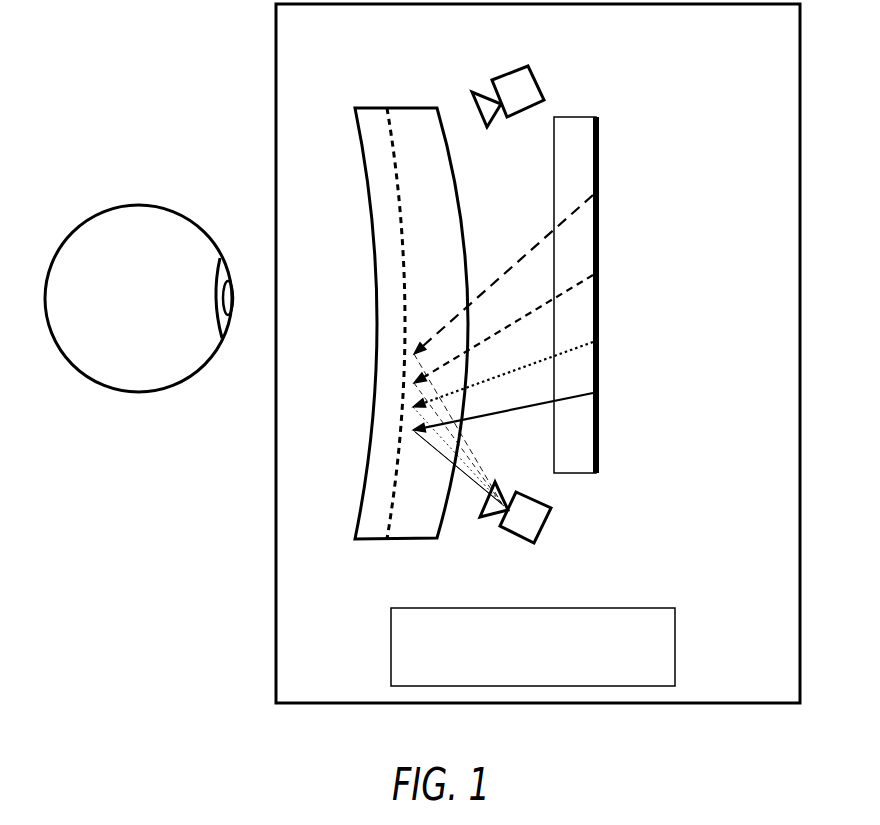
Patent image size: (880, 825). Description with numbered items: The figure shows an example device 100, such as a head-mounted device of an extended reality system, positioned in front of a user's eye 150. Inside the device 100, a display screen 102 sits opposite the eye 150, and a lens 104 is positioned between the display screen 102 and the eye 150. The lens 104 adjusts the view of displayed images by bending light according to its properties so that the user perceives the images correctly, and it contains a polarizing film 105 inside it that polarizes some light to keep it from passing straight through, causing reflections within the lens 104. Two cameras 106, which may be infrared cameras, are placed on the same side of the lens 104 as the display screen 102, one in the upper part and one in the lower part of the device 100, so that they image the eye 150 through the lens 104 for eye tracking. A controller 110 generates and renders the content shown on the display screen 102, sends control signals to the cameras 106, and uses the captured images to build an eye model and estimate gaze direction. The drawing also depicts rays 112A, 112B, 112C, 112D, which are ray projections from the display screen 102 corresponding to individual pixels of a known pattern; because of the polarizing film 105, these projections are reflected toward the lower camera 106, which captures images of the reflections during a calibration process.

The device 100 is at (320, 41).
The display screen 102 is at (622, 295).
The lens 104 is at (380, 323).
The polarizing film 105 is at (363, 323).
The cameras 106 is at (482, 303).
The controller 110 is at (552, 658).
The ray 112A is at (547, 274).
The ray 112B is at (564, 329).
The ray 112C is at (550, 374).
The ray 112D is at (541, 419).
The eye 150 is at (153, 307).